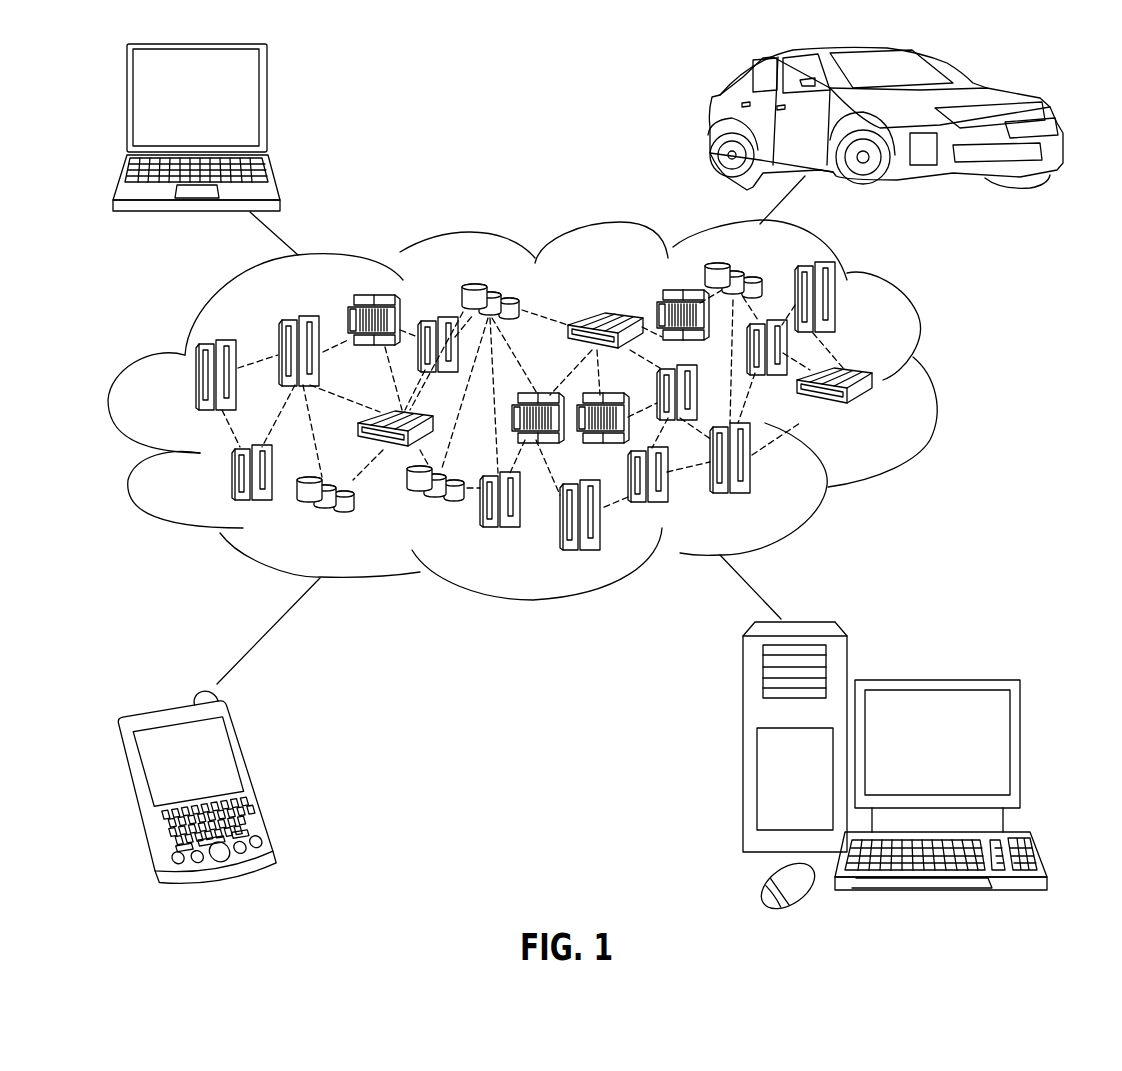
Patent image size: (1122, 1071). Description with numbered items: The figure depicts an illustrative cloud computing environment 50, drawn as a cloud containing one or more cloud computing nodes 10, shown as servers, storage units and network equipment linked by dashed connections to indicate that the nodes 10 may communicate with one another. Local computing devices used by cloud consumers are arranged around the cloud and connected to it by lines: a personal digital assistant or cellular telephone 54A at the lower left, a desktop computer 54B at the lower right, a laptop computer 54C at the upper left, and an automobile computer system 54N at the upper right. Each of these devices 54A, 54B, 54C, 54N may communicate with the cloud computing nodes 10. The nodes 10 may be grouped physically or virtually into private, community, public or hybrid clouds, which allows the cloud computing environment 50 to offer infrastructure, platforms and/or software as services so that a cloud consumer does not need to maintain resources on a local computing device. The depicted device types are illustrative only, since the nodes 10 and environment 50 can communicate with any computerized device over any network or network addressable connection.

The cloud computing nodes 10 is at (557, 410).
The cloud computing environment 50 is at (935, 385).
The personal digital assistant (PDA) or cellular telephone 54A is at (258, 775).
The desktop computer 54B is at (935, 678).
The laptop computer 54C is at (266, 107).
The automobile computer system 54N is at (710, 122).